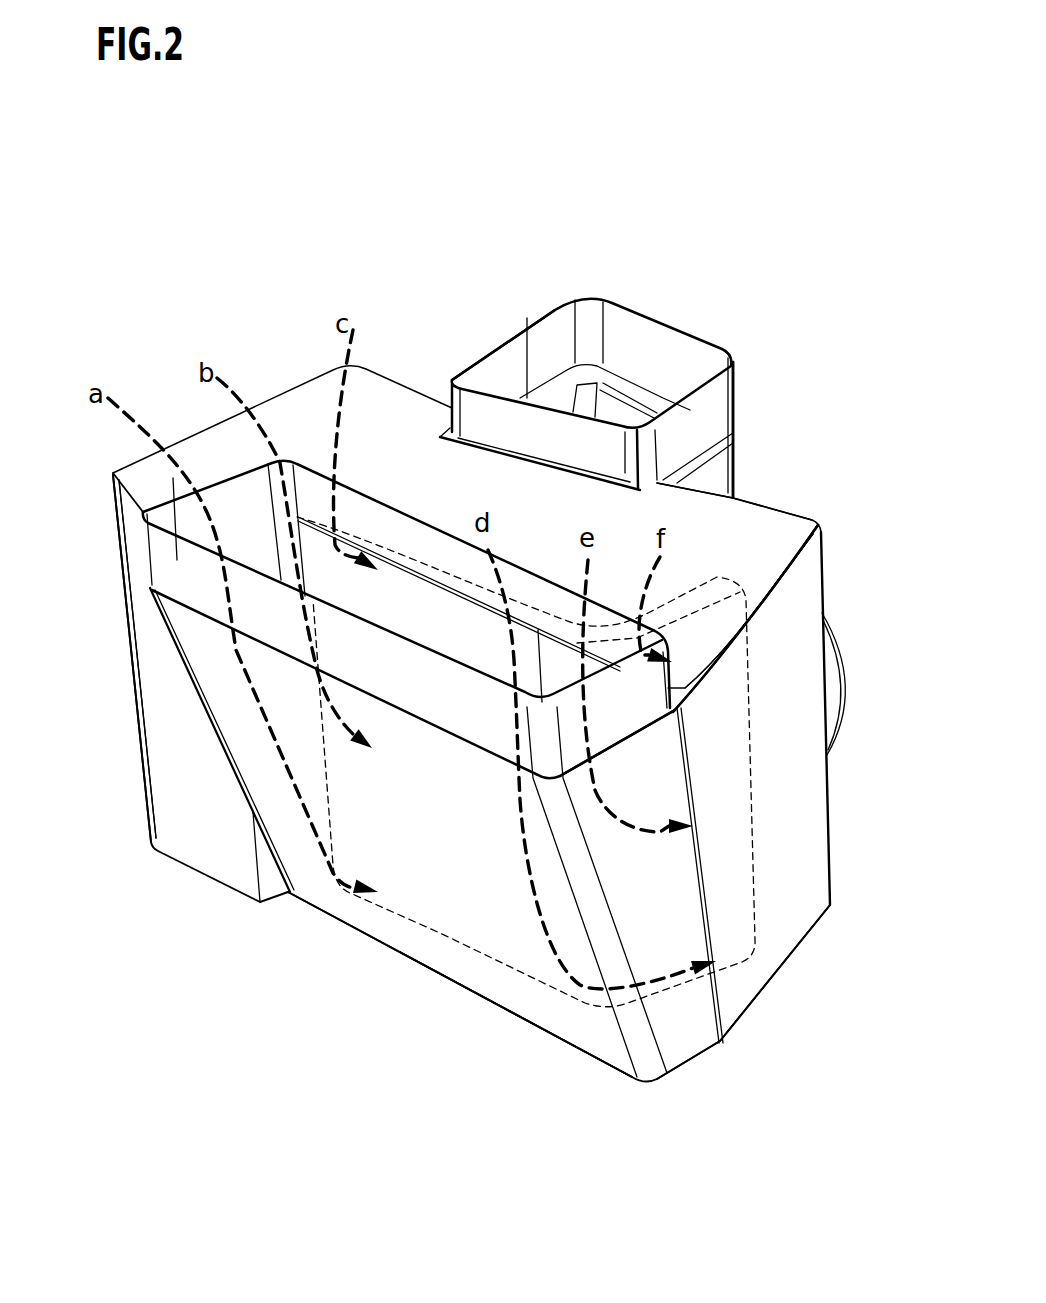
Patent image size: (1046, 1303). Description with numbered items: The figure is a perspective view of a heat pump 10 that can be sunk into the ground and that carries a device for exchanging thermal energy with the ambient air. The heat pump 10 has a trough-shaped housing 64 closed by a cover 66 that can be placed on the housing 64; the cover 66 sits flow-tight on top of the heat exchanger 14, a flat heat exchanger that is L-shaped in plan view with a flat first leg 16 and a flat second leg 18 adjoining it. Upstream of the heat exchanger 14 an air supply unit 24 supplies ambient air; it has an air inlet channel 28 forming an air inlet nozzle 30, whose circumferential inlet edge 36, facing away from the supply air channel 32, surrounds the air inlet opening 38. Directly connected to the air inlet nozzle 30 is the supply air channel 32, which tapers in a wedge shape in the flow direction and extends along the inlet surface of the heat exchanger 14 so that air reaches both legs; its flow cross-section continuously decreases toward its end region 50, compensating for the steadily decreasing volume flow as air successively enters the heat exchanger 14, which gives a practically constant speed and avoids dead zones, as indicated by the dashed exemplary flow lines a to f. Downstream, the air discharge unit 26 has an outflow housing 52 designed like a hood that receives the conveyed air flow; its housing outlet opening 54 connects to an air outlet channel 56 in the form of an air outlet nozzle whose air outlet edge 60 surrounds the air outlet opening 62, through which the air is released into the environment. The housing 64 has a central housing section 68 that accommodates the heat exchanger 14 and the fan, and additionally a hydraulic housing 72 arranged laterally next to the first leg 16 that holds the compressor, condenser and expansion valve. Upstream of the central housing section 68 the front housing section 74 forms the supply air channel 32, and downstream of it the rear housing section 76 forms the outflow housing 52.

The heat pump 10 is at (825, 270).
The heat exchanger 14 is at (365, 516).
The first leg 16 is at (412, 890).
The second leg 18 is at (733, 912).
The air supply unit 24 is at (118, 536).
The air discharge unit 26 is at (739, 318).
The air inlet channel 28 is at (168, 568).
The air inlet nozzle 30 is at (620, 718).
The supply air channel 32 is at (247, 735).
The inlet edge 36 is at (233, 473).
The air inlet opening 38 is at (310, 493).
The end region 50 is at (453, 962).
The outflow housing 52 is at (833, 630).
The housing outlet opening 54 is at (622, 365).
The air outlet channel 56 is at (712, 400).
The air outlet edge 60 is at (560, 300).
The air outlet opening 62 is at (668, 357).
The housing 64 is at (827, 598).
The cover 66 is at (789, 506).
The central housing section 68 is at (800, 895).
The hydraulic housing 72 is at (165, 654).
The front housing section 74 is at (637, 1033).
The rear housing section 76 is at (830, 717).